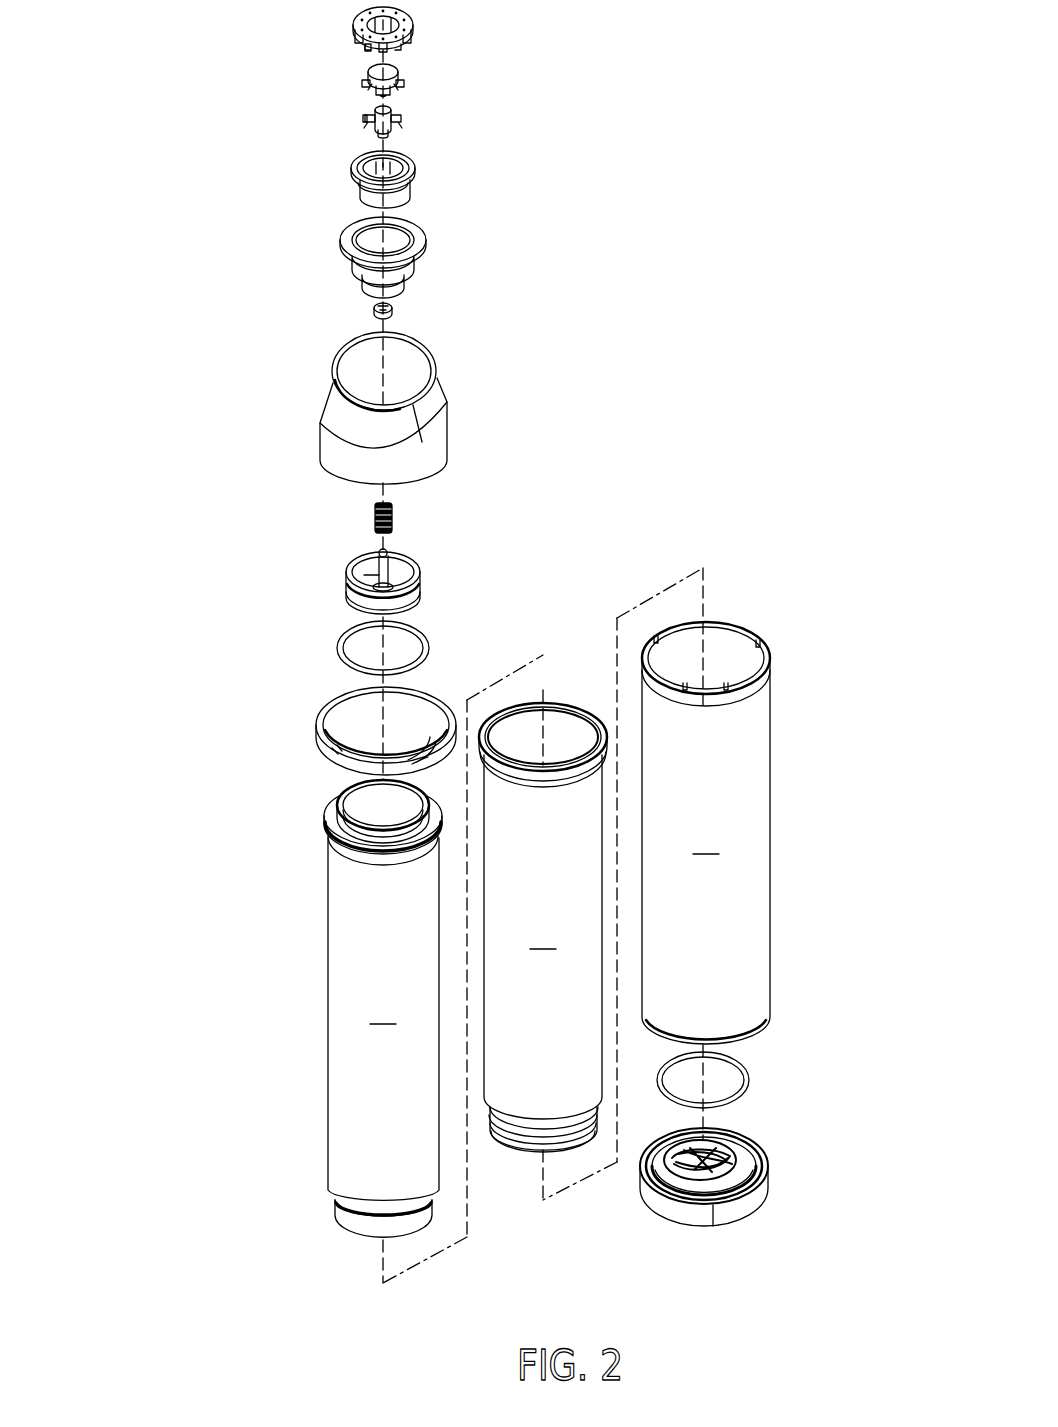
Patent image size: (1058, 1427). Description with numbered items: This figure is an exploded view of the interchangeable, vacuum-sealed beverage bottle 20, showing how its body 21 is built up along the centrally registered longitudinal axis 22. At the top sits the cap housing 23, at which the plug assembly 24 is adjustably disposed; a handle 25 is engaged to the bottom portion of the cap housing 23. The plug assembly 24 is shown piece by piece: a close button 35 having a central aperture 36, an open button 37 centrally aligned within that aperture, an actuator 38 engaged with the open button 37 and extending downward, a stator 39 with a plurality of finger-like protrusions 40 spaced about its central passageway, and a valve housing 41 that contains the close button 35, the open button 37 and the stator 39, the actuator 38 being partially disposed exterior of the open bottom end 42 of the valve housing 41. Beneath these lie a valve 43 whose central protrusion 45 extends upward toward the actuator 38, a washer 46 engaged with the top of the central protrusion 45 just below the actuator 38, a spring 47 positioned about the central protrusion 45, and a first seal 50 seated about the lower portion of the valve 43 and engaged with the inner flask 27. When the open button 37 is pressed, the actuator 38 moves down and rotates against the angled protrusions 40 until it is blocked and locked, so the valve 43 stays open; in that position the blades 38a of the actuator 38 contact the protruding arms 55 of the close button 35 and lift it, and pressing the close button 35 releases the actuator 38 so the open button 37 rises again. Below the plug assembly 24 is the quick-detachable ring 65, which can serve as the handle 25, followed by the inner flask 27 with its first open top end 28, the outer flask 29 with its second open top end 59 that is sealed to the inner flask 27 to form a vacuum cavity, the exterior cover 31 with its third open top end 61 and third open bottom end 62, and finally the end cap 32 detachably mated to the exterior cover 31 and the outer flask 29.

The vacuum-sealed beverage bottle 20 is at (768, 256).
The body 21 is at (841, 720).
The centrally registered longitudinal axis 22 is at (387, 373).
The cap housing 23 is at (435, 417).
The plug assembly 24 is at (177, 20).
The handle 25 is at (322, 733).
The inner flask 27 is at (383, 1018).
The first open top end 28 is at (338, 808).
The outer flask 29 is at (543, 926).
The exterior cover 31 is at (706, 857).
The end cap 32 is at (767, 1068).
The close button 35 is at (403, 23).
The central aperture 36 is at (392, 70).
The open button 37 is at (405, 80).
The actuator 38 is at (405, 118).
The blades 38a is at (367, 123).
The stator 39 is at (410, 193).
The finger-like protrusions 40 is at (352, 180).
The valve housing 41 is at (427, 243).
The open bottom end 42 is at (360, 1227).
The valve 43 is at (420, 578).
The central protrusion 45 is at (347, 568).
The washer 46 is at (373, 313).
The spring 47 is at (393, 515).
The first seal 50 is at (338, 652).
The protruding arms 55 is at (373, 50).
The second open top end 59 is at (558, 723).
The third open top end 61 is at (738, 630).
The third open bottom end 62 is at (767, 1015).
The quick-detachable ring 65 is at (443, 712).